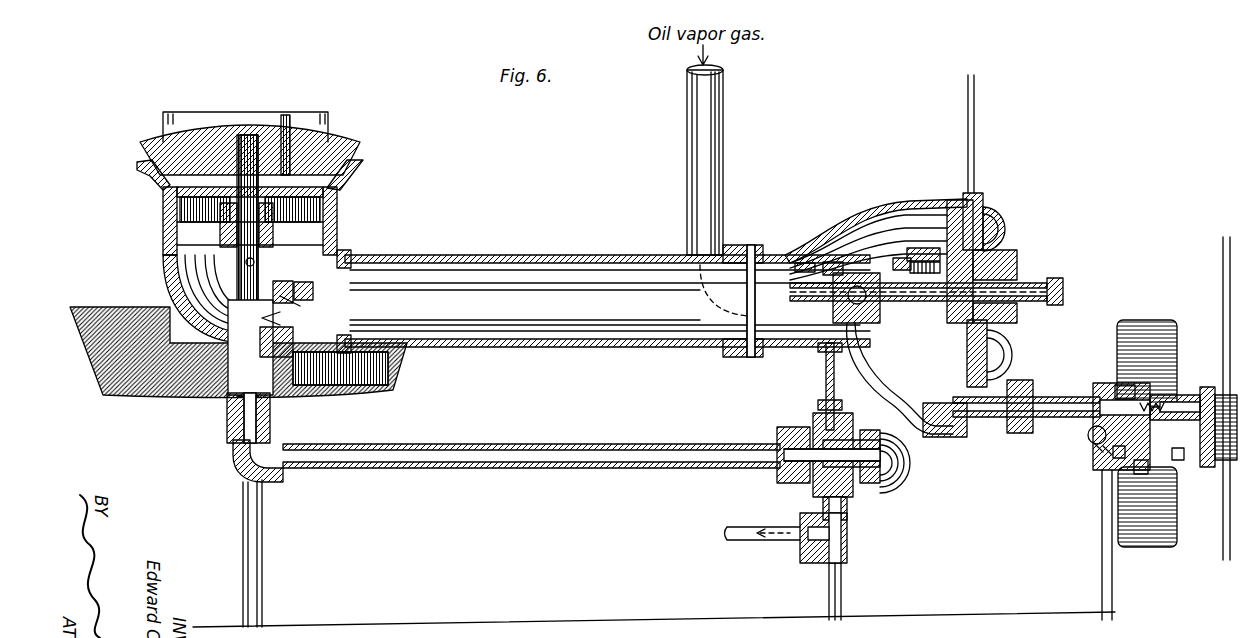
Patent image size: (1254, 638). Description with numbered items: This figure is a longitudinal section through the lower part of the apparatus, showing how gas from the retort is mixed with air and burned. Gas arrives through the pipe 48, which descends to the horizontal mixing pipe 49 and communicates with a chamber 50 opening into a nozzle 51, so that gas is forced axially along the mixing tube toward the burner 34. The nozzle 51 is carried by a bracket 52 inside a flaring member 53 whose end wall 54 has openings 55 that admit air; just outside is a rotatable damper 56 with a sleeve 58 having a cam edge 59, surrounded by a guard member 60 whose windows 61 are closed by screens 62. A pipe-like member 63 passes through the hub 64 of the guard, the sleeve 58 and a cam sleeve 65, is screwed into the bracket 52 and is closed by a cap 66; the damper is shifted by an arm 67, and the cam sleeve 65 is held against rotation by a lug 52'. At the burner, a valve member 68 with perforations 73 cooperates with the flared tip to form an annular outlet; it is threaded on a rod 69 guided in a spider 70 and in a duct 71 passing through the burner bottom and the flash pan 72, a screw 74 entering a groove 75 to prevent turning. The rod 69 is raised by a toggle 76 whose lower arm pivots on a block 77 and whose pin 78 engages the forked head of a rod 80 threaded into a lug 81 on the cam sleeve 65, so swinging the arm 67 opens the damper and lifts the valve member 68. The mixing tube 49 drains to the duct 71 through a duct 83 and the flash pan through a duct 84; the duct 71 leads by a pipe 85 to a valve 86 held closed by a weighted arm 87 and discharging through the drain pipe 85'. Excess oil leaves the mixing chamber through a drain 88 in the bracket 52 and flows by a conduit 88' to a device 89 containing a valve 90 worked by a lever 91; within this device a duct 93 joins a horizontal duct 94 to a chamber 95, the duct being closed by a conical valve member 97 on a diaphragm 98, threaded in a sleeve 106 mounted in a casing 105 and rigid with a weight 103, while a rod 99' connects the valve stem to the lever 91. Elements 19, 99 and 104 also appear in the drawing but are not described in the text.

The burner 34 is at (380, 157).
The valve member 68 is at (335, 138).
The perforations 73 is at (284, 120).
The screw 74 is at (225, 207).
The rod 69 is at (260, 198).
The duct 71 is at (246, 372).
The longitudinal groove 75 is at (224, 246).
The flash pan 72 is at (153, 396).
The duct 83 is at (286, 348).
The duct 84 is at (232, 408).
The pipe 85 is at (506, 522).
The mixing pipe 49 is at (526, 260).
The rod 80 is at (482, 290).
The pipe 48 is at (697, 132).
The member 53 is at (760, 350).
The drain 88 is at (807, 386).
The chamber 50 is at (856, 266).
The nozzle 51 is at (806, 256).
The lug 52' is at (824, 241).
The bracket 52 is at (859, 311).
The lug 81 is at (905, 260).
The cam sleeve 65 is at (930, 260).
The cam edge 59 is at (924, 282).
The end wall 54 is at (956, 206).
The guard member 60 is at (976, 200).
The arm 67 is at (976, 95).
The sleeve 58 is at (991, 231).
The rotatable damper 56 is at (996, 263).
The hub 64 is at (1016, 309).
The member 63 is at (1020, 285).
The cap 66 is at (1063, 290).
The openings 55 is at (949, 364).
The windows 61 is at (1000, 346).
The screens 62 is at (1000, 359).
The conduit 88' is at (1026, 393).
The valve 86 is at (796, 482).
The weighted arm 87 is at (876, 482).
The drain pipe 85' is at (747, 544).
The lever 91 is at (1223, 260).
The upper housing 104 is at (1152, 320).
The weight 103 is at (1178, 500).
The conical valve member 97 is at (1110, 395).
The diaphragm 98 is at (1118, 386).
The valve 90 is at (1175, 398).
The spring 99 is at (1171, 368).
The casing 105 is at (1182, 408).
The device 89 is at (1090, 436).
The duct 93 is at (1097, 448).
The horizontal duct 94 is at (1106, 451).
The chamber 95 is at (1118, 453).
The rod 99' is at (1109, 500).
The sleeve 106 is at (1184, 456).
The union nut 19 is at (316, 284).
The toggle 76 is at (292, 282).
The pin 78 is at (300, 302).
The block 77 is at (264, 318).
The spider 70 is at (281, 277).